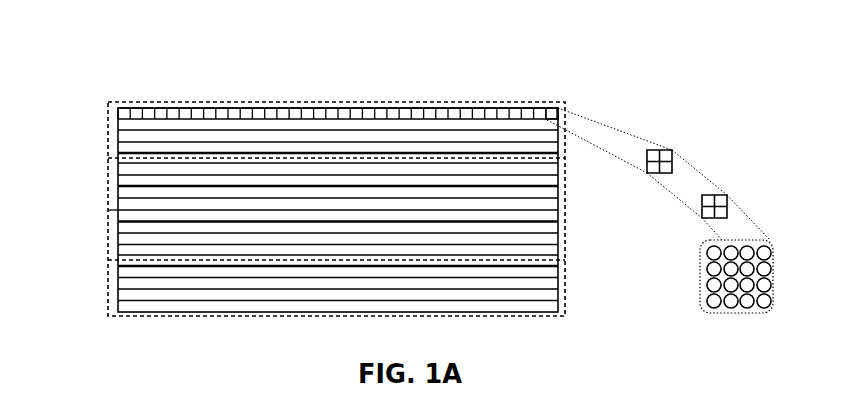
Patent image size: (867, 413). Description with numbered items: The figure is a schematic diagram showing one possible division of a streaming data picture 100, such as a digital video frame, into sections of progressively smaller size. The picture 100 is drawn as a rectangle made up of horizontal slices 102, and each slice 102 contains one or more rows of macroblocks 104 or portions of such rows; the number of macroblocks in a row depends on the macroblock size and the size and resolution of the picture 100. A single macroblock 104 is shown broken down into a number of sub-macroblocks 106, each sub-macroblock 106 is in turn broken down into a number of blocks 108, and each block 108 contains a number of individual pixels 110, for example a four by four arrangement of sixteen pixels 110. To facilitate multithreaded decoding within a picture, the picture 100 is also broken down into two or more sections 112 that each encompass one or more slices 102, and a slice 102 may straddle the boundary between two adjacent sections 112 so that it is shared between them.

The picture 100 is at (133, 55).
The slice 102 is at (116, 113).
The macroblock 104 is at (650, 130).
The sub-macroblock 106 is at (737, 173).
The block 108 is at (720, 217).
The pixel 110 is at (747, 302).
The section 112 is at (90, 157).